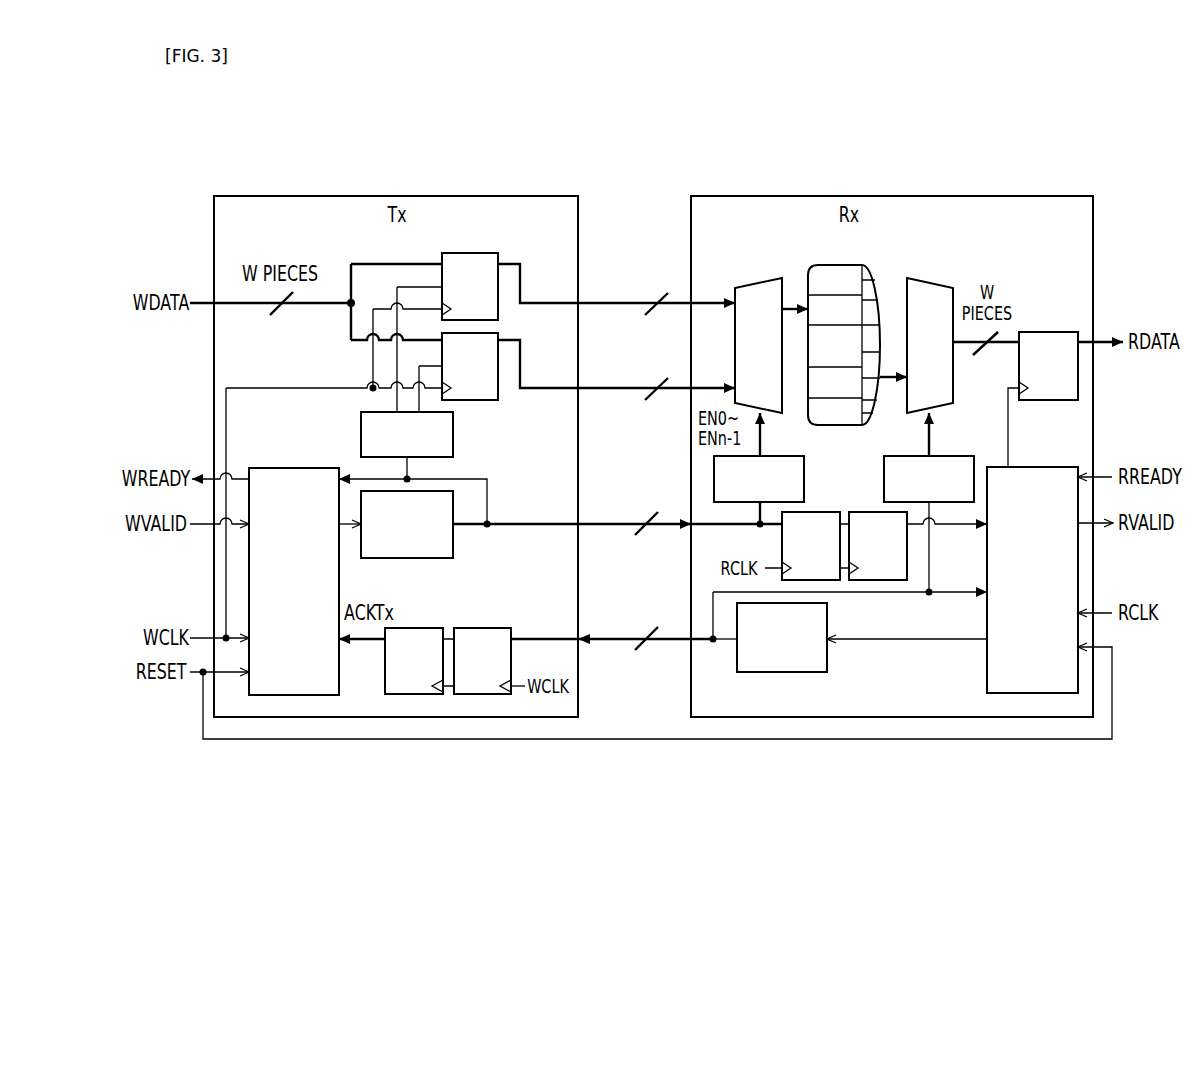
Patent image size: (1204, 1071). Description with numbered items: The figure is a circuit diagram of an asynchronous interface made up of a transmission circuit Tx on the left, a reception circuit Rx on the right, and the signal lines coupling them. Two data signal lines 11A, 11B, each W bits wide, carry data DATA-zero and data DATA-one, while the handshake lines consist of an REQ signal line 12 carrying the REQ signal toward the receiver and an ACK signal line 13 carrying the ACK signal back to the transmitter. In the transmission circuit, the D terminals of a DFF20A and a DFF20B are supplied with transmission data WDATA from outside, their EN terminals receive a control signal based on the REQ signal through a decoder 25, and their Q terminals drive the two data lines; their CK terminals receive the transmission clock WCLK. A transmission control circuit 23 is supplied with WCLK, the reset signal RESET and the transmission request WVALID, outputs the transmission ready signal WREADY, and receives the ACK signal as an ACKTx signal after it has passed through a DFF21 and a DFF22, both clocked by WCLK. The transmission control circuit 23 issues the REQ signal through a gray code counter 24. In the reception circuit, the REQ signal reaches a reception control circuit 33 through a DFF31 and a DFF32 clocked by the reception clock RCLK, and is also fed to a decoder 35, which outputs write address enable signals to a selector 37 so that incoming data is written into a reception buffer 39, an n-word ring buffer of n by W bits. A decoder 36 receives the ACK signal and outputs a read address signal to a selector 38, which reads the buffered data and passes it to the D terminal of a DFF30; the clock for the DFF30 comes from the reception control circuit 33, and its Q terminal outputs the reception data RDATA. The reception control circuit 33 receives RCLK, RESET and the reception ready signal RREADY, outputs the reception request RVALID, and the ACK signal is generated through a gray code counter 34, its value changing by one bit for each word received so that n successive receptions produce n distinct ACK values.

The data signal line 11A is at (673, 295).
The data signal line 11B is at (670, 392).
The REQ signal line 12 is at (672, 530).
The ACK signal line 13 is at (672, 645).
The transmission control circuit 23 is at (292, 467).
The gray code counter 24 is at (410, 558).
The decoder 25 is at (453, 436).
The reception control circuit 33 is at (1033, 466).
The gray code counter 34 is at (790, 672).
The decoder 35 is at (770, 456).
The decoder 36 is at (942, 454).
The selector 37 is at (760, 285).
The selector 38 is at (929, 285).
The reception buffer 39 is at (862, 320).
The D type flip flop DFF20A is at (473, 253).
The D type flip flop DFF20B is at (470, 400).
The D type flip flop DFF21 is at (400, 628).
The D type flip flop DFF22 is at (470, 628).
The D type flip flop DFF30 is at (1047, 330).
The D type flip flop DFF31 is at (780, 540).
The D type flip flop DFF32 is at (858, 510).